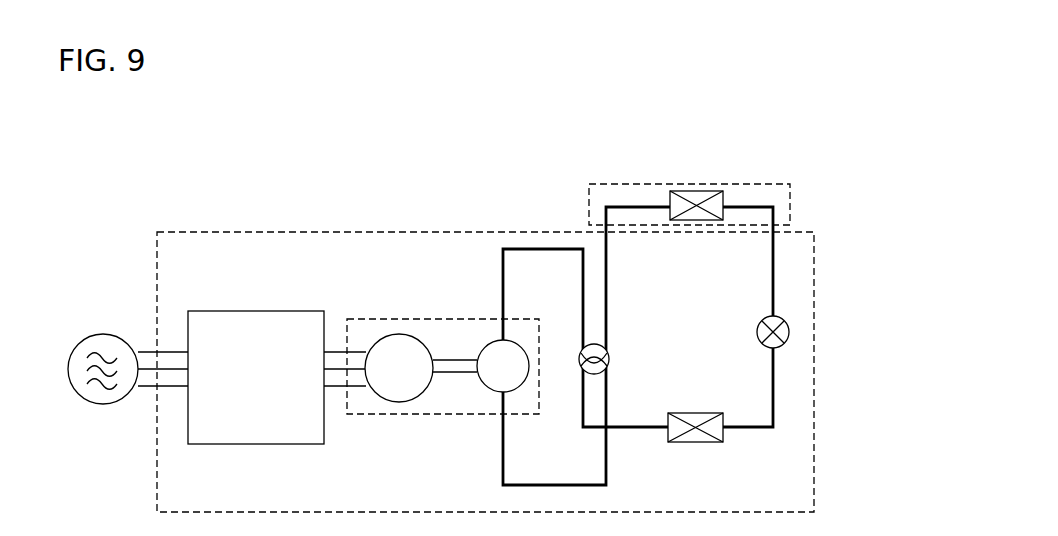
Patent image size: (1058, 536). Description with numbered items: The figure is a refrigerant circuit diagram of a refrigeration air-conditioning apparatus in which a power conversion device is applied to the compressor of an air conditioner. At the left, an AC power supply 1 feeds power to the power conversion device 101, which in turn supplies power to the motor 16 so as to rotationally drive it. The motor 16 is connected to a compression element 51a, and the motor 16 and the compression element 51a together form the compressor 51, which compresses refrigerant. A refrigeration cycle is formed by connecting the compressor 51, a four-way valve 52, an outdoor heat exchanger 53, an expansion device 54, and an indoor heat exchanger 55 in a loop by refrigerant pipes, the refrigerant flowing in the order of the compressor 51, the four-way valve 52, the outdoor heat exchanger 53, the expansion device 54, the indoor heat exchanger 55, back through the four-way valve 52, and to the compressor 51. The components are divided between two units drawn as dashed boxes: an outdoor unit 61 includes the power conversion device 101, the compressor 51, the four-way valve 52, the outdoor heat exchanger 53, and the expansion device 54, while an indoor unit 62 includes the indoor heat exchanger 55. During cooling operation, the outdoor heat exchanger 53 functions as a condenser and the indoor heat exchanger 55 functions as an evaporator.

The AC power supply 1 is at (78, 336).
The power conversion device 101 is at (250, 446).
The outdoor unit 61 is at (298, 232).
The indoor unit 62 is at (752, 184).
The compressor 51 is at (358, 318).
The motor 16 is at (401, 334).
The compression element 51a is at (488, 395).
The four-way valve 52 is at (611, 358).
The outdoor heat exchanger 53 is at (690, 443).
The expansion device 54 is at (790, 318).
The indoor heat exchanger 55 is at (690, 190).